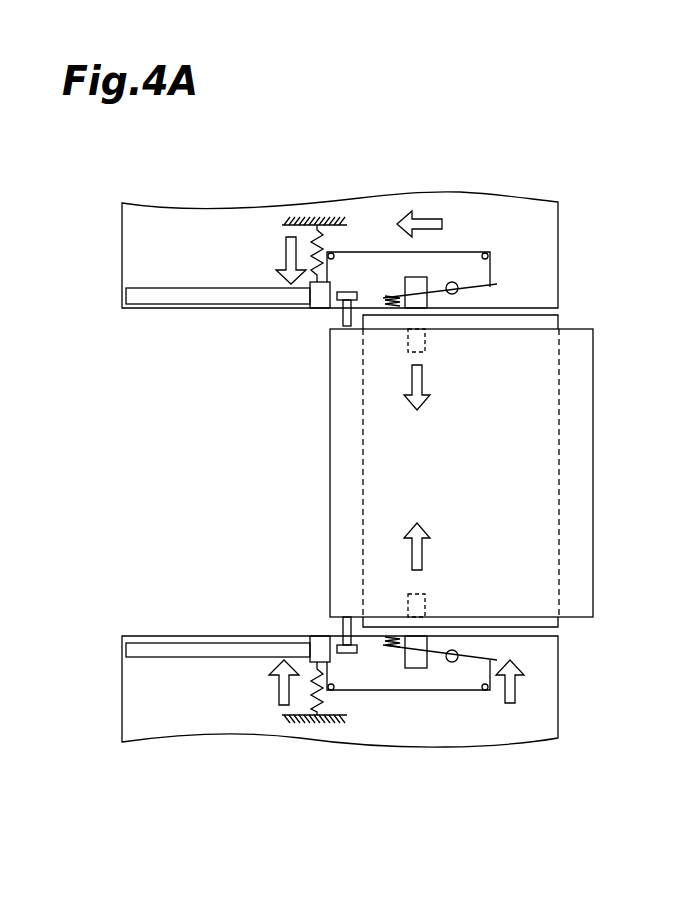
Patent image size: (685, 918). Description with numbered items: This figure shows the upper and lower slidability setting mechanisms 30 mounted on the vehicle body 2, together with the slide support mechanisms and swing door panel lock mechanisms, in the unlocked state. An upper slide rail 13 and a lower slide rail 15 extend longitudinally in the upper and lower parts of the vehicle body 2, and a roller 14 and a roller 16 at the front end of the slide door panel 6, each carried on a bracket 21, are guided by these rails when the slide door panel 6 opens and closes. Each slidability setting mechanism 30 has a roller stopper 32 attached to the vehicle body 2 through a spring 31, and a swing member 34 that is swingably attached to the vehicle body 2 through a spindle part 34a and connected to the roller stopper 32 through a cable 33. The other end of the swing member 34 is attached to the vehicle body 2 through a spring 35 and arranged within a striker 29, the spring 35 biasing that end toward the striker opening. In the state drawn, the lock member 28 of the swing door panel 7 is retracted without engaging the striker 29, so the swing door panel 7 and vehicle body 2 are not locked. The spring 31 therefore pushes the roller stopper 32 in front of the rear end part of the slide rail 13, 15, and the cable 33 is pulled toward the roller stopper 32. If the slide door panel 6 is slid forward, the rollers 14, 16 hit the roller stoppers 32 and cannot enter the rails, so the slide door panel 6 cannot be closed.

The vehicle body 2 is at (192, 208).
The slide door panel 6 is at (594, 474).
The swing door panel 7 is at (530, 322).
The upper slide rail 13 is at (196, 305).
The roller 14 is at (350, 292).
The lower slide rail 15 is at (196, 647).
The roller 16 is at (350, 654).
The bracket 21 is at (347, 322).
The lock member 28 is at (425, 345).
The striker 29 is at (424, 302).
The slidability setting mechanism 30 is at (476, 236).
The spring 31 is at (325, 216).
The roller stopper 32 is at (318, 306).
The cable 33 is at (374, 252).
The swing member 34 is at (480, 290).
The spindle part 34a is at (458, 285).
The spring 35 is at (383, 300).